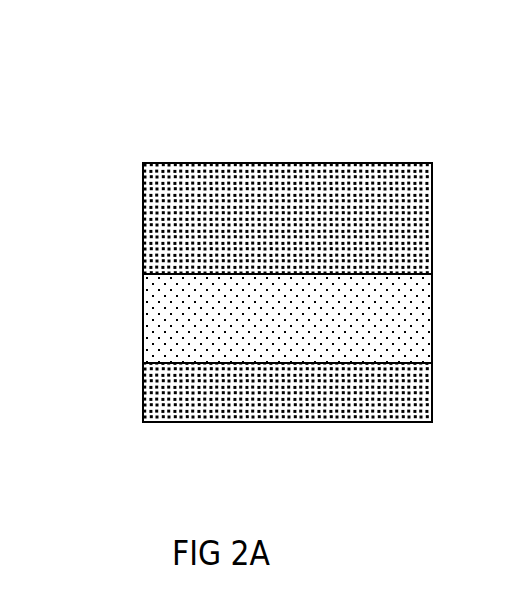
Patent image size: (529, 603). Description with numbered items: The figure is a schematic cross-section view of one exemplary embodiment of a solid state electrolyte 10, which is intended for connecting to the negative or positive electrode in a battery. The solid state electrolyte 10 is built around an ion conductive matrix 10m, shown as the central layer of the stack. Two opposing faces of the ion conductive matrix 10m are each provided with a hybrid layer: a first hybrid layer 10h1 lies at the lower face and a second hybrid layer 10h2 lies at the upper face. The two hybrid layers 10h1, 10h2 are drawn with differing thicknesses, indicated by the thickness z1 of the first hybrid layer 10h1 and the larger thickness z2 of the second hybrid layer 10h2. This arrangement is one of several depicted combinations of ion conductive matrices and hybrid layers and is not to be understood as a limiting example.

The solid state electrolyte 10 is at (153, 97).
The hybrid layer 10h2 is at (210, 216).
The ion conductive matrix 10m is at (210, 329).
The hybrid layer 10h1 is at (210, 395).
The thickness z2 is at (434, 163).
The thickness z1 is at (434, 363).